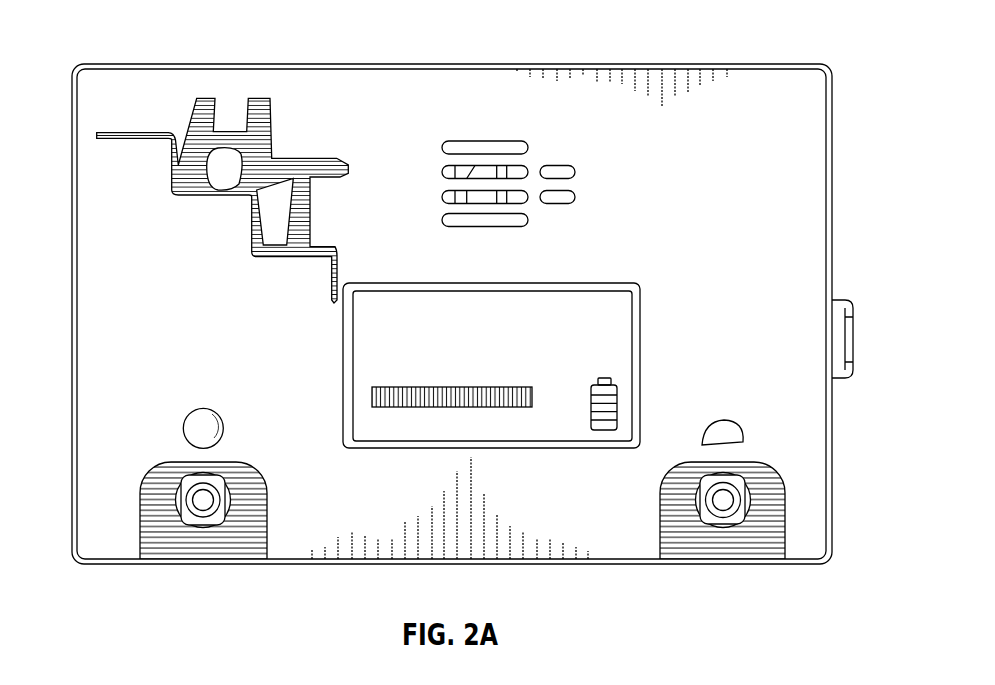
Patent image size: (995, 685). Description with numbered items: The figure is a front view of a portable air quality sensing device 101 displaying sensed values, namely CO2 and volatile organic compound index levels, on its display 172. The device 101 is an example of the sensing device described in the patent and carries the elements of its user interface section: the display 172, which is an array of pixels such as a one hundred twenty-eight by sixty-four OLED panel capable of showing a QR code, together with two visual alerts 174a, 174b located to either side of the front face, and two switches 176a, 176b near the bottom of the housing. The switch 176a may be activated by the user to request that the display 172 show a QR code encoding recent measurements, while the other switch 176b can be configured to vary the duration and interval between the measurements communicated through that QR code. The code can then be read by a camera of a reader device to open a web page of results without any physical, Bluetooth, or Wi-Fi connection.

The portable air quality sensing device 101 is at (131, 45).
The display 172 is at (642, 318).
The visual alert 174a is at (182, 431).
The visual alert 174b is at (723, 421).
The switch 176a is at (203, 502).
The switch 176b is at (723, 502).